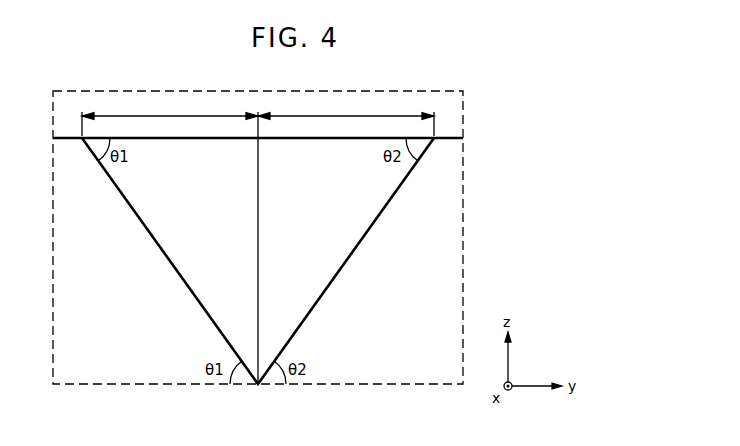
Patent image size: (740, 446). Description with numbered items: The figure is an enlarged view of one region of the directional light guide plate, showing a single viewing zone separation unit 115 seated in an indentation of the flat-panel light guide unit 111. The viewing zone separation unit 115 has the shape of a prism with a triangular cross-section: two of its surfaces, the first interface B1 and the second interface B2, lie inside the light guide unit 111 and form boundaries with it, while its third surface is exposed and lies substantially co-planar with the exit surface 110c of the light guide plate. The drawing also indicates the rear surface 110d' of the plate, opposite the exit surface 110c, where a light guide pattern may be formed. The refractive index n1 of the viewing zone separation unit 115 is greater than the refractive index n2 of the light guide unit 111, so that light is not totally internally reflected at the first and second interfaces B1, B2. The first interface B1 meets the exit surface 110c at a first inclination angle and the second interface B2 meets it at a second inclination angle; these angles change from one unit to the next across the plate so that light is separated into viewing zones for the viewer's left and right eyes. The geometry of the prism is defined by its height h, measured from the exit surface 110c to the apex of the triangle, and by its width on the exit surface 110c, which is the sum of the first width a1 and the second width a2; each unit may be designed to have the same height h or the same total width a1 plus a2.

The exit surface 110c is at (422, 139).
The bottom surface of light guide plate 110d' is at (258, 257).
The viewing zone separation unit 115 is at (327, 210).
The light guide unit 111 is at (440, 237).
The first interface B1 is at (164, 255).
The second interface B2 is at (352, 255).
The first width portion a1 is at (170, 116).
The second width portion a2 is at (346, 116).
The height h is at (266, 248).
The refractive index of viewing zone separation units n1 is at (219, 168).
The refractive index of light guide unit n2 is at (71, 263).